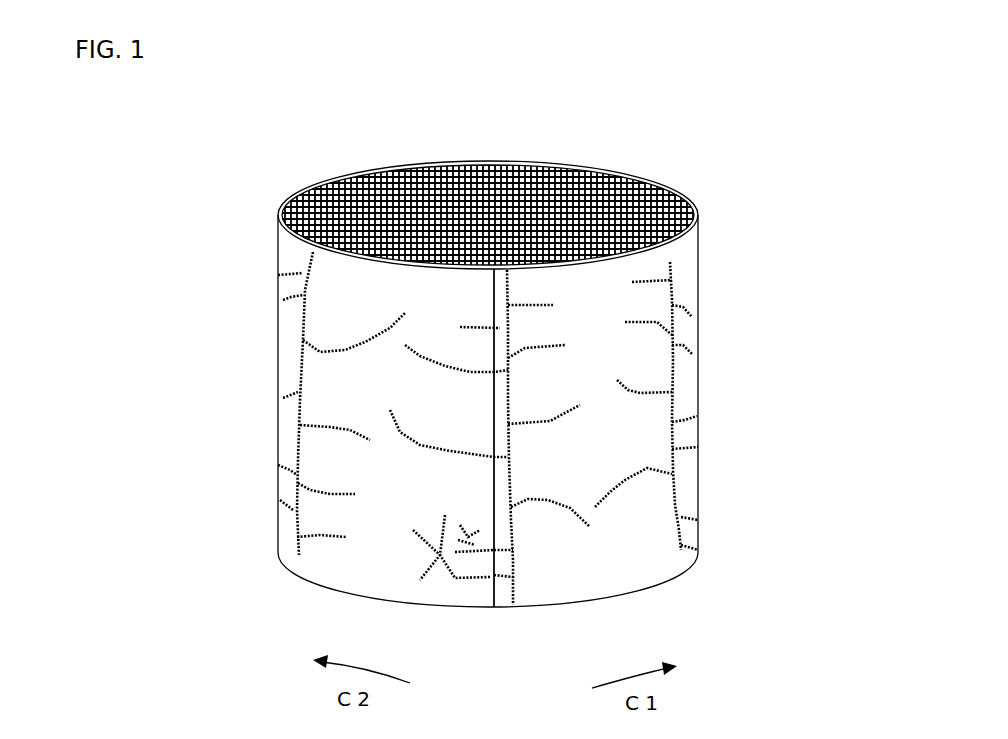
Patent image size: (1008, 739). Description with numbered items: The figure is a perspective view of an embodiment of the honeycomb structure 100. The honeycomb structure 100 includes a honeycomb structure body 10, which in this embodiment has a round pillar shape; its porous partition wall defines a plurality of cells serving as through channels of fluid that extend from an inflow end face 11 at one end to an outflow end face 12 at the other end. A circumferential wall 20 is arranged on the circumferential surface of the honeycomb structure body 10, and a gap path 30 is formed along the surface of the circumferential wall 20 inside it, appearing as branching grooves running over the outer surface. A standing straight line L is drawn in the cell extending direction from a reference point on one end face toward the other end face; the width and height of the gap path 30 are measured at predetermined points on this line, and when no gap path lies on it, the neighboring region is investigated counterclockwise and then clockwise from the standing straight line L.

The honeycomb structure 100 is at (831, 104).
The honeycomb structure body 10 is at (628, 166).
The inflow end face 11 is at (303, 190).
The outflow end face 12 is at (610, 597).
The circumferential wall 20 is at (704, 272).
The gap path 30 is at (300, 545).
The standing straight line L is at (492, 588).